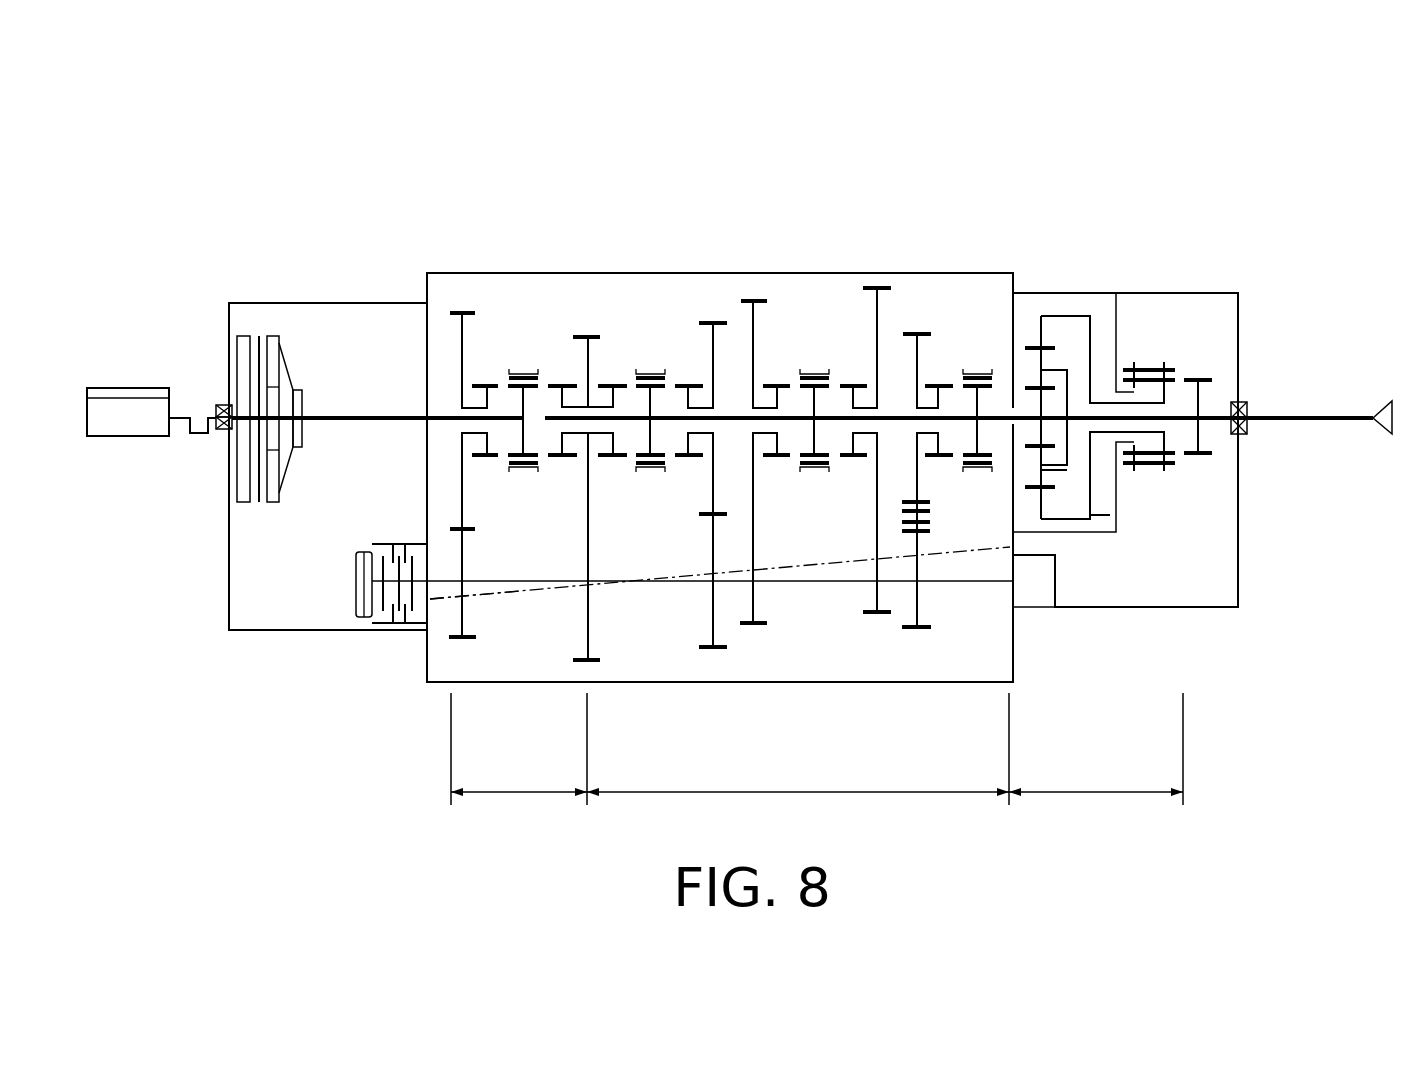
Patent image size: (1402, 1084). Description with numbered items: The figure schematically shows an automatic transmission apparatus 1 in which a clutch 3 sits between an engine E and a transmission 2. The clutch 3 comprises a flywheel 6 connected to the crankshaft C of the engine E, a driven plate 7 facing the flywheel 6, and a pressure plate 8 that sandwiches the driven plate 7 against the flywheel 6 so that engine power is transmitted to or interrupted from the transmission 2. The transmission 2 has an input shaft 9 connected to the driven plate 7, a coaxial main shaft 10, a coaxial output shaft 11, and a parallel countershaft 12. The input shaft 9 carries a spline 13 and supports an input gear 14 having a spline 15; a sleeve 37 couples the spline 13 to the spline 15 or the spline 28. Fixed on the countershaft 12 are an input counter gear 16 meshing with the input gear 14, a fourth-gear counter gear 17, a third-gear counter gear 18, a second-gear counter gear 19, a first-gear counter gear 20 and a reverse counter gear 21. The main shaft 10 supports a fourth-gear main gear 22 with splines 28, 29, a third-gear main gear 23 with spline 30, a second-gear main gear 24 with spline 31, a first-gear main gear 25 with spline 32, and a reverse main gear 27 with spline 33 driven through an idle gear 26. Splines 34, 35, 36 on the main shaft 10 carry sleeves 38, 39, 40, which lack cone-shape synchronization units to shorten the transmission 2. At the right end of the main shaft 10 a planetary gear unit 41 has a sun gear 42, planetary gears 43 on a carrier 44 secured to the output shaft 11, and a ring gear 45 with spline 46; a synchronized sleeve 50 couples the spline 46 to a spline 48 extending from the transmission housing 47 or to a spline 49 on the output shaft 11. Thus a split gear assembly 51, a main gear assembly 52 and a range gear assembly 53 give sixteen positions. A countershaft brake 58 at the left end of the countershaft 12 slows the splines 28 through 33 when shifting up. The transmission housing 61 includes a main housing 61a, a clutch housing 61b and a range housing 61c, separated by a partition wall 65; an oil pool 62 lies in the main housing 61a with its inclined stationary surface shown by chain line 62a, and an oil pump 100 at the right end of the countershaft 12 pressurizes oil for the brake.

The engine E is at (137, 422).
The crankshaft C is at (212, 438).
The automatic transmission apparatus 1 is at (270, 361).
The transmission 2 is at (648, 194).
The clutch 3 is at (306, 356).
The flywheel 6 is at (244, 372).
The driven plate 7 is at (256, 348).
The pressure plate 8 is at (275, 342).
The input shaft 9 is at (345, 414).
The main shaft 10 is at (722, 414).
The output shaft 11 is at (1305, 413).
The countershaft 12 is at (808, 582).
The spline 13 is at (552, 388).
The input gear 14 is at (461, 311).
The spline 15 is at (485, 458).
The input counter gear 16 is at (465, 640).
The fourth-gear counter gear 17 is at (590, 662).
The third-gear counter gear 18 is at (698, 646).
The second-gear counter gear 19 is at (757, 625).
The first-gear counter gear 20 is at (877, 614).
The reverse counter gear 21 is at (930, 626).
The fourth-gear main gear 22 is at (586, 336).
The third-gear main gear 23 is at (712, 321).
The second-gear main gear 24 is at (753, 300).
The first-gear main gear 25 is at (877, 287).
The idle gear 26 is at (931, 520).
The reverse main gear 27 is at (920, 333).
The spline 28 is at (550, 472).
The spline 29 is at (645, 472).
The spline 30 is at (686, 458).
The spline 31 is at (780, 458).
The spline 32 is at (860, 460).
The spline 33 is at (947, 457).
The spline 34 is at (680, 386).
The spline 35 is at (830, 380).
The spline 36 is at (995, 382).
The sleeve 37 is at (521, 371).
The sleeve 38 is at (648, 371).
The sleeve 39 is at (812, 370).
The sleeve 40 is at (973, 370).
The planetary gear unit 41 is at (1089, 240).
The sun gear 42 is at (1053, 442).
The planetary gears 43 is at (1057, 350).
The carrier 44 is at (1069, 370).
The ring gear 45 is at (1050, 534).
The spline 46 is at (1178, 470).
The transmission housing 47 is at (1118, 536).
The spline 48 is at (1110, 492).
The spline 49 is at (1200, 380).
The sleeve 50 is at (1148, 372).
The split gear assembly 51 is at (519, 749).
The main gear assembly 52 is at (798, 749).
The range gear assembly 53 is at (1096, 749).
The countershaft brake 58 is at (352, 532).
The transmission housing 61 is at (749, 507).
The main housing 61a is at (427, 684).
The clutch housing 61b is at (288, 632).
The range housing 61c is at (1200, 608).
The oil pool 62 is at (565, 629).
The oil surface 62a is at (485, 598).
The partition wall 65 is at (425, 470).
The oil pump 100 is at (1035, 590).